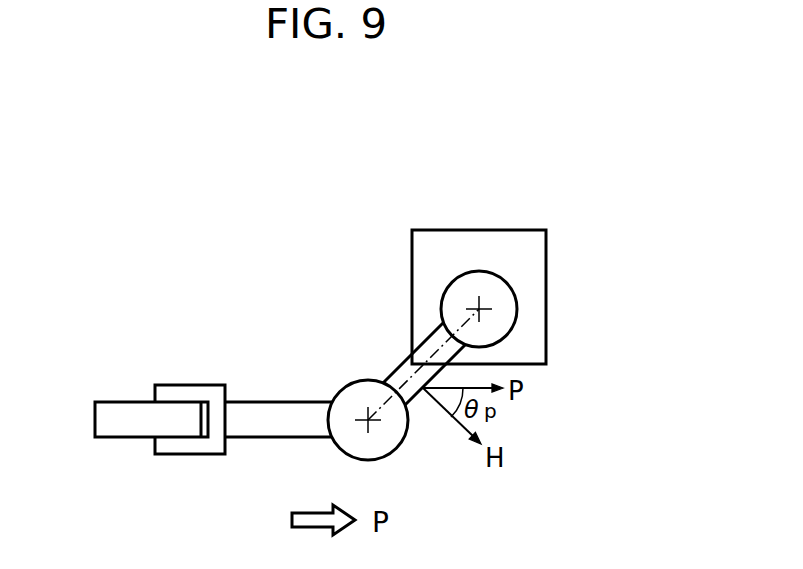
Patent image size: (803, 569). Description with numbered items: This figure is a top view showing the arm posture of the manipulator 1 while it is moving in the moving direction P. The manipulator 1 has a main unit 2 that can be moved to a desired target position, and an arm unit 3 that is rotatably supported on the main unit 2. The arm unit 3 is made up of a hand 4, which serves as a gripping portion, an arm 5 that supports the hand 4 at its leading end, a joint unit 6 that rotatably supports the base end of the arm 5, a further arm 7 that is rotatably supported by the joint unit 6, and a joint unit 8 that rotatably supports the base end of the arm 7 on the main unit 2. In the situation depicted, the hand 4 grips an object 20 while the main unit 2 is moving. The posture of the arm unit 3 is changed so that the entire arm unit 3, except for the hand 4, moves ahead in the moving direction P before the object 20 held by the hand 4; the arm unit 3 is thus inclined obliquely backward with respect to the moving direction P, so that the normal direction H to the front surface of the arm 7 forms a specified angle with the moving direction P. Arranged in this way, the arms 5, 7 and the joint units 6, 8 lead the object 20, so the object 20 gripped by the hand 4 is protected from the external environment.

The manipulator 1 is at (561, 207).
The main unit 2 is at (518, 230).
The arm unit 3 is at (145, 163).
The hand (gripping portion) 4 is at (203, 385).
The arm 5 is at (288, 402).
The joint unit 6 is at (355, 380).
The arm 7 is at (400, 357).
The joint unit 8 is at (459, 276).
The object 20 is at (125, 402).